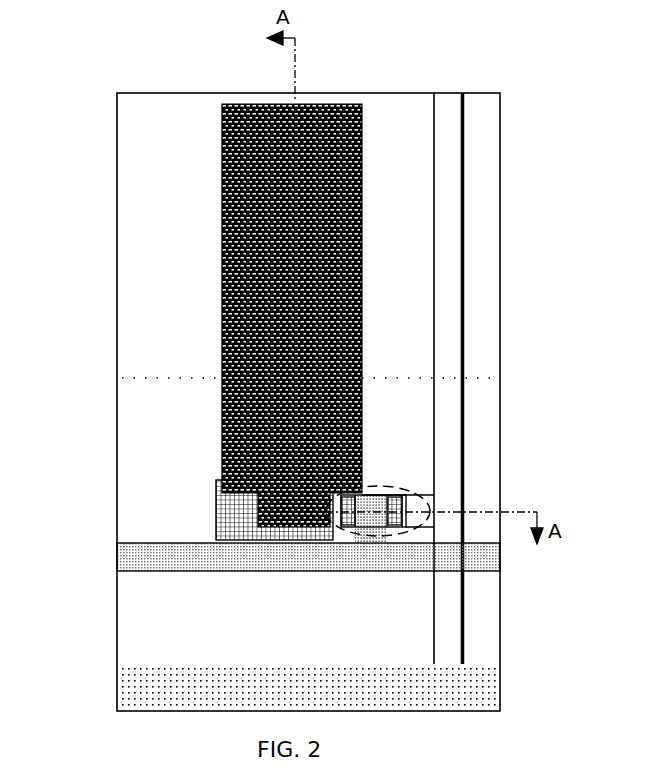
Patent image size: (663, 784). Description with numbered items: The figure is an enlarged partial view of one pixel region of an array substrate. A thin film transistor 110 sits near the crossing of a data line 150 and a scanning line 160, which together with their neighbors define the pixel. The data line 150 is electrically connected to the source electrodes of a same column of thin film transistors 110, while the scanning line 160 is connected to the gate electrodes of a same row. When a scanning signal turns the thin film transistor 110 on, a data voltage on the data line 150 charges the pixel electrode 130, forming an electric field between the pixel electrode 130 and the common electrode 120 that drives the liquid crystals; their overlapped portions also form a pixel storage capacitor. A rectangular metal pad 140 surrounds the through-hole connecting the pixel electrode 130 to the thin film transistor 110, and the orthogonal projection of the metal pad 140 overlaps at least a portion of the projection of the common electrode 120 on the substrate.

The thin film transistor 110 is at (376, 487).
The common electrode 120 is at (143, 318).
The pixel electrode 130 is at (328, 104).
The metal pad 140 is at (238, 524).
The data line 150 is at (458, 243).
The scanning line 160 is at (131, 557).